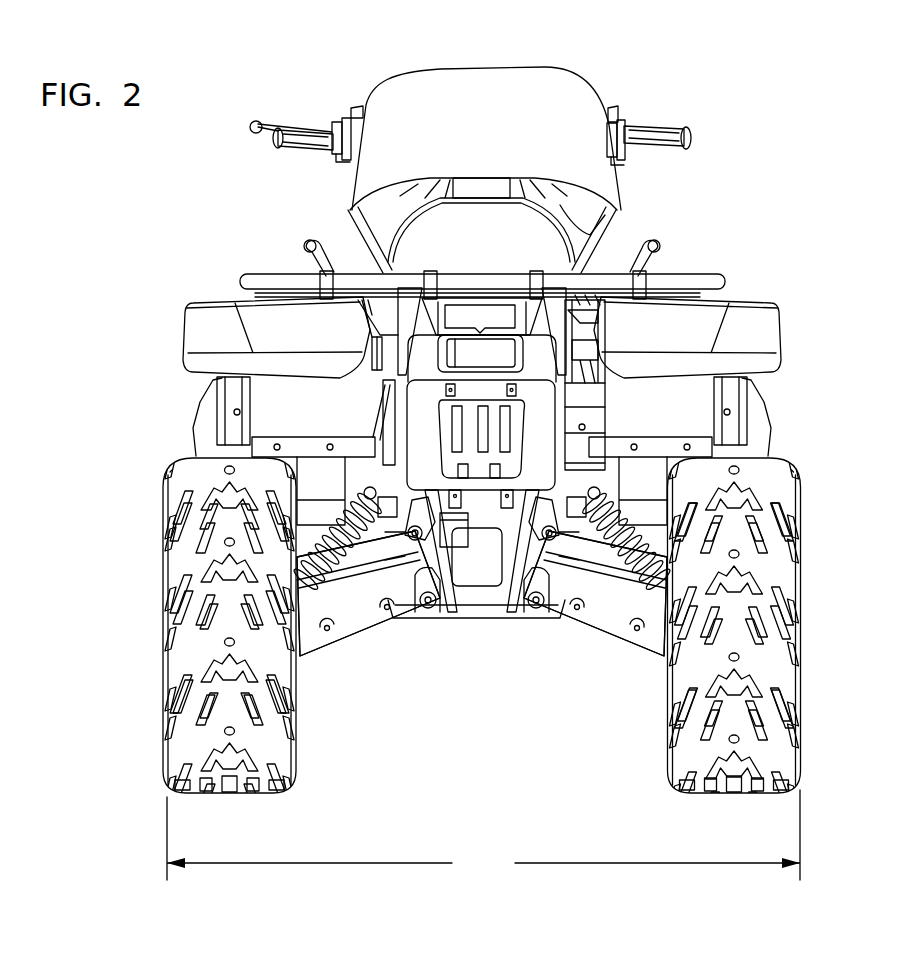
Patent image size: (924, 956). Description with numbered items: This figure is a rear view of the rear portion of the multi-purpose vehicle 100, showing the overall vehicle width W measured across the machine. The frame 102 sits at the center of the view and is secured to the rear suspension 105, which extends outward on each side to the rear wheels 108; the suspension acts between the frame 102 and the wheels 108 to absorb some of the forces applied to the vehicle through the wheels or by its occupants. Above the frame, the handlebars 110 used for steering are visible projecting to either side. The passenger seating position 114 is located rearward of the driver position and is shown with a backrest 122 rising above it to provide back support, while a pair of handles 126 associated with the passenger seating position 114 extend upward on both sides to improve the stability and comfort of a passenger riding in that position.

The multi-purpose vehicle 100 is at (836, 146).
The frame 102 is at (453, 607).
The rear suspension 105 is at (381, 646).
The rear wheels 108 is at (267, 767).
The handlebars 110 is at (625, 113).
The passenger seating position 114 is at (553, 236).
The backrest 122 is at (552, 90).
The handles 126 is at (306, 240).